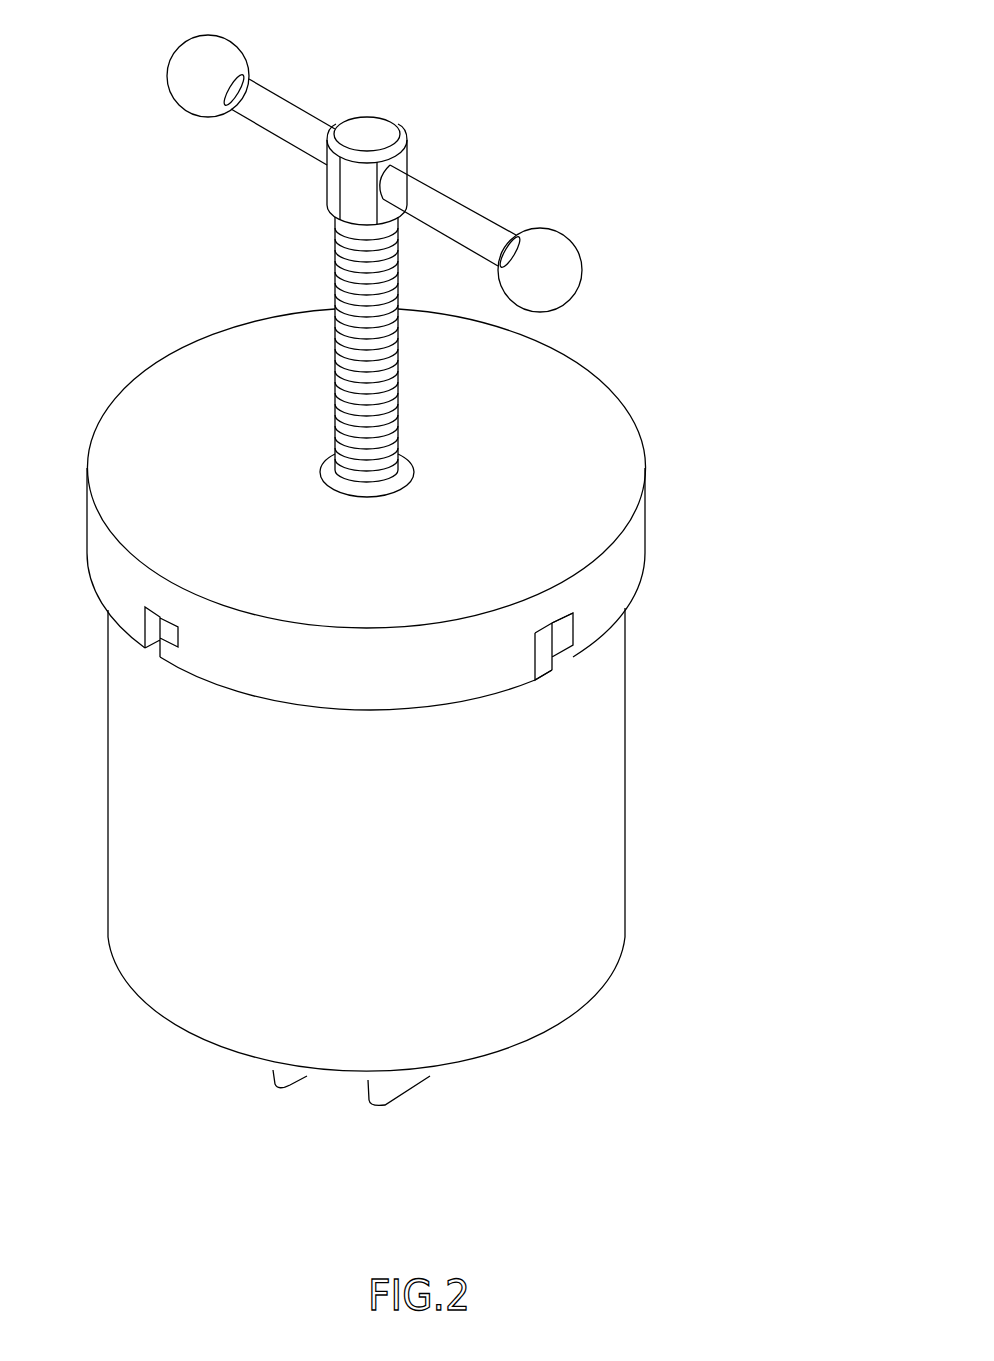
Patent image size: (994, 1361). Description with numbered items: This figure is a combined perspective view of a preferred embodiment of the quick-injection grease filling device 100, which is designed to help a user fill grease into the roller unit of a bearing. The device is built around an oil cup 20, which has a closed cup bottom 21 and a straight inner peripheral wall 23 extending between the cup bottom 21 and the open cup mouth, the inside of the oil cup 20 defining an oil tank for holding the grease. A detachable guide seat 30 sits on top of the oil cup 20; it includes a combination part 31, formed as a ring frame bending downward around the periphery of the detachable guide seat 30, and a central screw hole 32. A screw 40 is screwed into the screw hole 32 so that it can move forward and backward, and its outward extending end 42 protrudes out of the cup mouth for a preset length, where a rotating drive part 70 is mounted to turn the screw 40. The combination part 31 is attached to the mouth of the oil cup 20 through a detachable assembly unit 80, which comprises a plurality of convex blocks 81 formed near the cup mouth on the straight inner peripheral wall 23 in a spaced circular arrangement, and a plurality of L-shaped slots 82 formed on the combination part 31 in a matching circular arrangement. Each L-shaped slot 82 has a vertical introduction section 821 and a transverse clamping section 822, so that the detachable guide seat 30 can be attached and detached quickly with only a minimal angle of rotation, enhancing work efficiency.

The quick-injection grease filling device 100 is at (757, 41).
The oil cup 20 is at (640, 933).
The cup bottom 21 is at (517, 1053).
The straight inner peripheral wall 23 is at (175, 785).
The detachable guide seat 30 is at (620, 378).
The combination part 31 is at (632, 543).
The screw hole 32 is at (345, 481).
The screw 40 is at (330, 270).
The outward extending end 42 is at (367, 130).
The rotating drive part 70 is at (467, 195).
The detachable assembly unit 80 is at (488, 645).
The convex block 81 is at (568, 630).
The L-shaped slot 82 is at (548, 668).
The vertical introduction section 821 is at (536, 652).
The transverse clamping section 822 is at (552, 626).